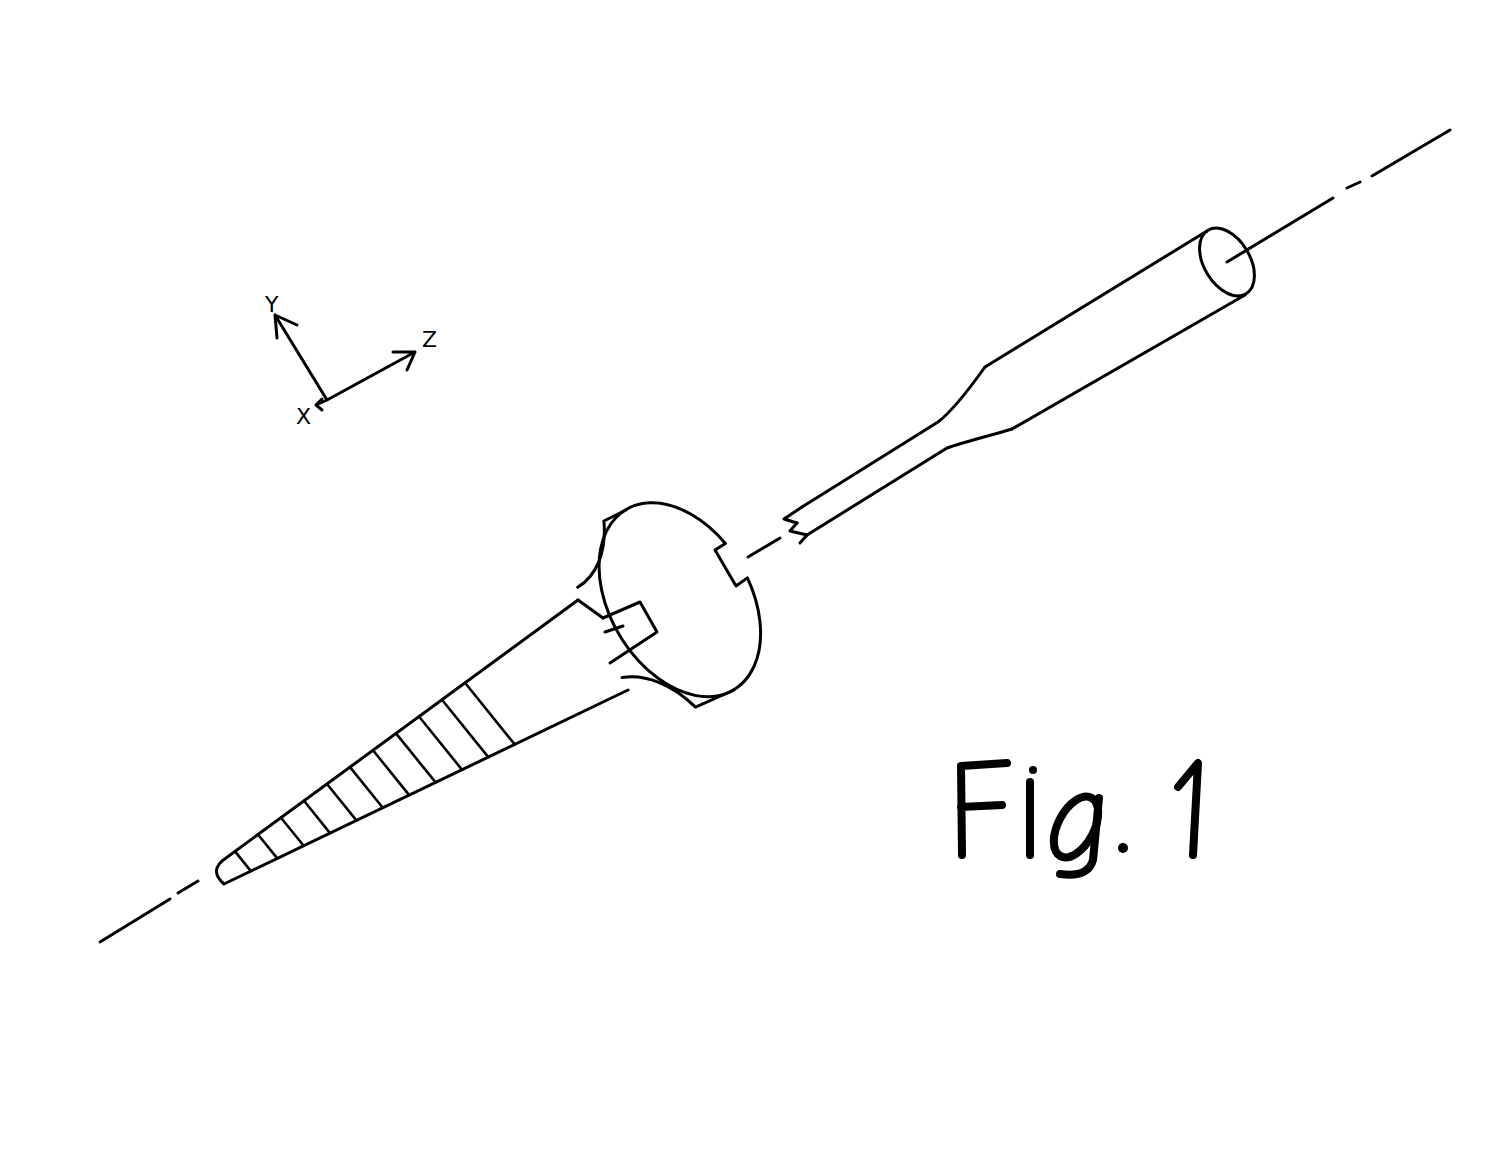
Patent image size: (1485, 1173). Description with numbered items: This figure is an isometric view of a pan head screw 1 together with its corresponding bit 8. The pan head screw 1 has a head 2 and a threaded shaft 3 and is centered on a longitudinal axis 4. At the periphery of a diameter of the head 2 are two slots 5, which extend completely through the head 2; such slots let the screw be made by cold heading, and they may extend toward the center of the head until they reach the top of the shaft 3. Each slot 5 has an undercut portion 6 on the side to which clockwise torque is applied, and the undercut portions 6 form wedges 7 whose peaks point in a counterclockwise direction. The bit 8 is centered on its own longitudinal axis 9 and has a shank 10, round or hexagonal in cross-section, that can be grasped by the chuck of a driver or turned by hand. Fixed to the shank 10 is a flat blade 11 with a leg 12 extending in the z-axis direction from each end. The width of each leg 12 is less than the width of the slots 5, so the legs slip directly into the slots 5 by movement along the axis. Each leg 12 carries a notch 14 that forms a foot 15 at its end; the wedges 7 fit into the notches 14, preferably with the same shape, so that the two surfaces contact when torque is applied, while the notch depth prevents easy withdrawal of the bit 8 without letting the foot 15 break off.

The pan head screw 1 is at (465, 678).
The head 2 is at (633, 505).
The threaded shaft 3 is at (357, 755).
The longitudinal axis 4 is at (143, 903).
The slots 5 is at (612, 627).
The undercut portion 6 is at (605, 631).
The wedges 7 is at (610, 615).
The bit 8 is at (991, 411).
The longitudinal axis 9 is at (1313, 208).
The shank 10 is at (1125, 363).
The flat blade 11 is at (900, 482).
The leg 12 is at (805, 540).
The notch 14 is at (797, 517).
The foot 15 is at (782, 527).